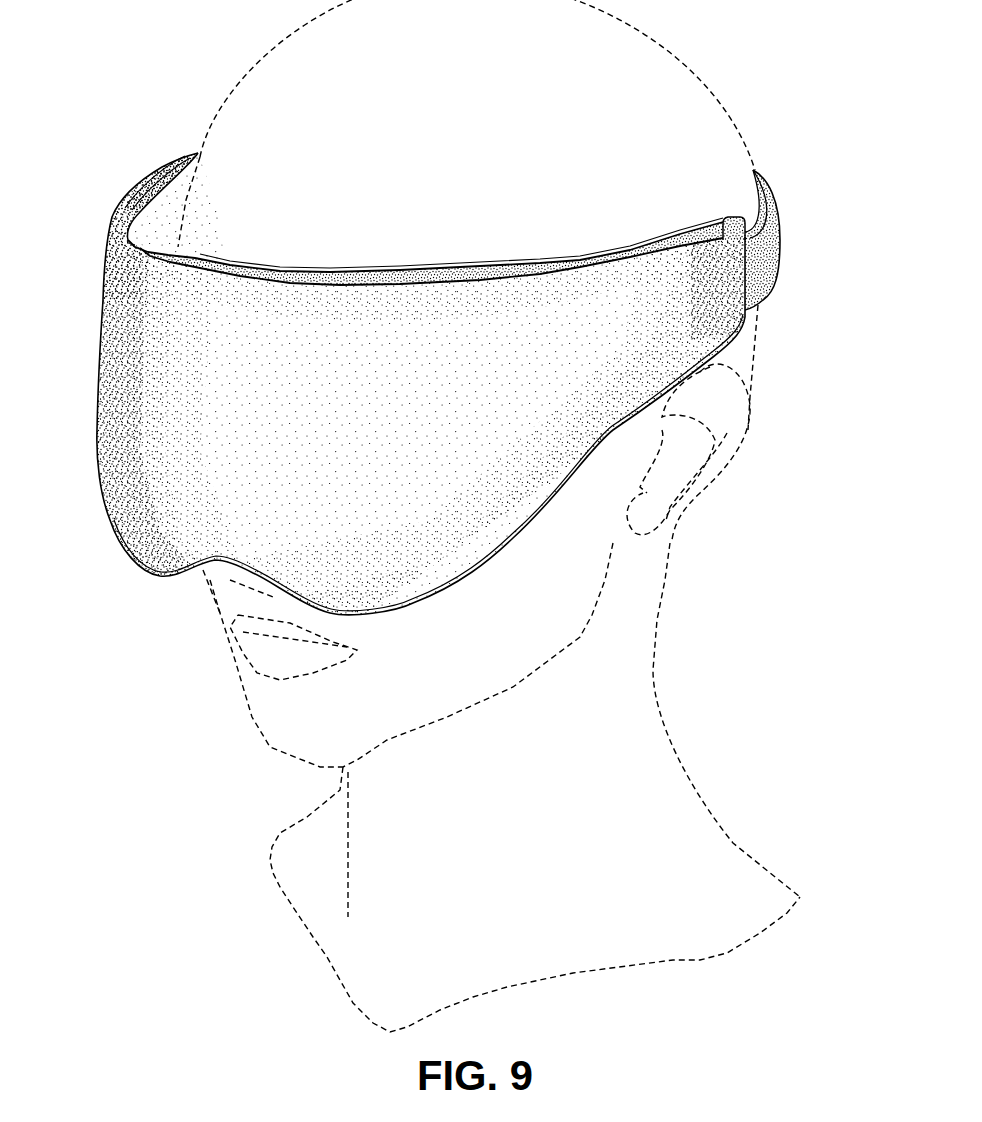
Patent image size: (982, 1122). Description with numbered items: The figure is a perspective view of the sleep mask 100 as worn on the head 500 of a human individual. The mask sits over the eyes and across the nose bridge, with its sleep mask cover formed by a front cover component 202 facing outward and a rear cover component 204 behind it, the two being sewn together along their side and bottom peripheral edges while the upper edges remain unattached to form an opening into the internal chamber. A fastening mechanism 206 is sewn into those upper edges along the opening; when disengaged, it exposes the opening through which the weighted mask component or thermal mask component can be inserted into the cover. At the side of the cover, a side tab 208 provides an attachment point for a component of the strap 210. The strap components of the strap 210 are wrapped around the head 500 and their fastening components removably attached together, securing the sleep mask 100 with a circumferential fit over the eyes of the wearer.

The sleep mask 100 is at (803, 224).
The front cover component 202 is at (284, 444).
The rear cover component 204 is at (162, 223).
The fastening mechanism 206 is at (167, 187).
The side tab 208 is at (723, 232).
The strap 210 is at (782, 256).
The head 500 is at (653, 672).